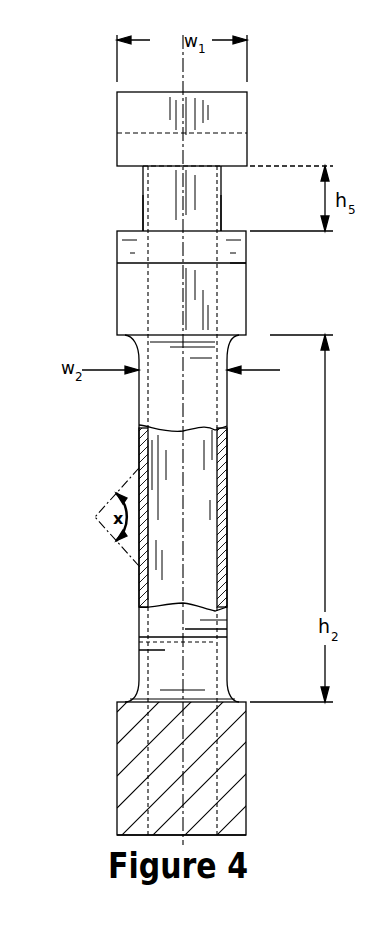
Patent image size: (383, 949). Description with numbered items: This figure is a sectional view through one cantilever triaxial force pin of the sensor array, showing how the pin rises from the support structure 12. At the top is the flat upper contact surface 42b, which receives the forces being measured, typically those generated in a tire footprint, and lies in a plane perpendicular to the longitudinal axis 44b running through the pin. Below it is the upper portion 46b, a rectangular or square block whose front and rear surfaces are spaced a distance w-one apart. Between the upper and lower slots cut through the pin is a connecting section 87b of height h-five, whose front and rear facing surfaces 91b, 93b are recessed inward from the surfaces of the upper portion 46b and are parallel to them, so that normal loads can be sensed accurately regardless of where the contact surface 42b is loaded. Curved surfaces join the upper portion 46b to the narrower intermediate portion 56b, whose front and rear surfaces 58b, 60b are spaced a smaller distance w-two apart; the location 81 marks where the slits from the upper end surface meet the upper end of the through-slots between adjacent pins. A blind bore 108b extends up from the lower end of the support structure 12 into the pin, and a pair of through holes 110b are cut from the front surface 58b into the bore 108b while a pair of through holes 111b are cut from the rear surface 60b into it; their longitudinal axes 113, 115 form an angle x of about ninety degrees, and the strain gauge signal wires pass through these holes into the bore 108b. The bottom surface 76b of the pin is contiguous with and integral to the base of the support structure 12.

The upper contact surface 42b is at (155, 92).
The connecting section 87b is at (162, 183).
The front facing surface 91b is at (143, 200).
The rear facing surface 93b is at (222, 212).
The upper portion 46b is at (132, 298).
The location 81 is at (248, 335).
The intermediate portion 56b is at (298, 405).
The through hole 110b is at (139, 468).
The through hole 111b is at (227, 468).
The blind bore 108b is at (218, 545).
The longitudinal axis 113 is at (105, 500).
The longitudinal axis 115 is at (118, 555).
The front surface 58b is at (139, 623).
The longitudinal axis 44b is at (186, 640).
The rear surface 60b is at (227, 629).
The support structure 12 is at (135, 762).
The bottom surface 76b is at (130, 835).